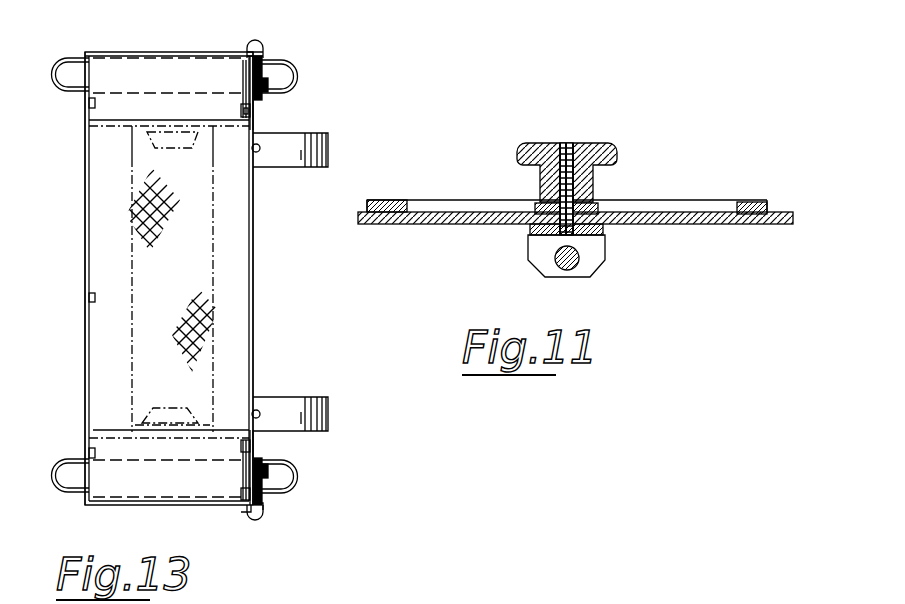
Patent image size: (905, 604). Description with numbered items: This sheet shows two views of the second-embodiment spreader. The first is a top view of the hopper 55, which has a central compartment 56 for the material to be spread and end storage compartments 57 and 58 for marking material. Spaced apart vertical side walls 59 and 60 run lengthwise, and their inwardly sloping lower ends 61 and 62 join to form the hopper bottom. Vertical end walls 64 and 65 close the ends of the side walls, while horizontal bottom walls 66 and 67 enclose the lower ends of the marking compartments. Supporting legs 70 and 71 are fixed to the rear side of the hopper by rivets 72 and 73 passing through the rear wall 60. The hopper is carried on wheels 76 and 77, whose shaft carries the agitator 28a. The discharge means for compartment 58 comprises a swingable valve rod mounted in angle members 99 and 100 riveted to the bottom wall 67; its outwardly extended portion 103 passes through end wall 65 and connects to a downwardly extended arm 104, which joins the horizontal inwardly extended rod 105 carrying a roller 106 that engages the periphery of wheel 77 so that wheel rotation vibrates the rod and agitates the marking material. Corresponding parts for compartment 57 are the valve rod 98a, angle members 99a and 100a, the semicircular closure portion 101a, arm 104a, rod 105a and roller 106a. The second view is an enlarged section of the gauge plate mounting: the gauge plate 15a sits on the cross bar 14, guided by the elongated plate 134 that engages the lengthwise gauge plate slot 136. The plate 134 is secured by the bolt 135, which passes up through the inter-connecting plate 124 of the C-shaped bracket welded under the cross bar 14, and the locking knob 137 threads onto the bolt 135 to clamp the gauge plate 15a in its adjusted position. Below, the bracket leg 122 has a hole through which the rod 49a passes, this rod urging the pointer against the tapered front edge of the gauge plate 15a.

In FIG. 13, the hopper 55 is at (84, 258).
In FIG. 13, the sloping lower end of side wall 61 is at (95, 217).
In FIG. 13, the side wall 59 is at (84, 360).
In FIG. 13, the sloping lower end of side wall 62 is at (247, 268).
In FIG. 13, the side wall 60 is at (258, 292).
In FIG. 13, the end wall 64 is at (160, 54).
In FIG. 13, the end wall 65 is at (158, 505).
In FIG. 13, the bottom wall 66 is at (110, 72).
In FIG. 13, the end storage compartment 57 is at (90, 101).
In FIG. 13, the bottom wall 67 is at (100, 487).
In FIG. 13, the wheel 77 is at (290, 78).
In FIG. 13, the wheel 76 is at (290, 480).
In FIG. 13, the agitator 28a is at (190, 236).
In FIG. 13, the central compartment 56 is at (85, 301).
In FIG. 13, the end storage compartment 58 is at (87, 453).
In FIG. 13, the supporting leg 71 is at (290, 157).
In FIG. 13, the rivet 73 is at (267, 152).
In FIG. 13, the supporting leg 70 is at (287, 403).
In FIG. 13, the rivet 72 is at (263, 414).
In FIG. 13, the valve rod 98a is at (252, 82).
In FIG. 13, the downwardly extended arm 104a is at (259, 42).
In FIG. 13, the rod 105a is at (264, 55).
In FIG. 13, the roller 106a is at (271, 83).
In FIG. 13, the angle member 99a is at (243, 64).
In FIG. 13, the angle member 100a is at (241, 108).
In FIG. 13, the semicircular integral portion 101a is at (264, 104).
In FIG. 13, the downwardly extended arm 104 is at (249, 520).
In FIG. 13, the rod 105 is at (264, 507).
In FIG. 13, the outwardly extended portion 103 is at (244, 513).
In FIG. 13, the roller 106 is at (270, 467).
In FIG. 13, the angle member 99 is at (241, 492).
In FIG. 13, the angle member 100 is at (241, 440).
In FIG. 11, the cross bar 14 is at (772, 232).
In FIG. 11, the gauge plate 15a is at (757, 203).
In FIG. 11, the gauge plate slot 136 is at (738, 202).
In FIG. 11, the elongated plate 134 is at (532, 207).
In FIG. 11, the locking knob 137 is at (613, 153).
In FIG. 11, the bolt 135 is at (578, 184).
In FIG. 11, the inter-connecting plate 124 is at (528, 232).
In FIG. 11, the leg of C-shaped supporting bracket 122 is at (596, 257).
In FIG. 11, the rod 49a is at (567, 271).